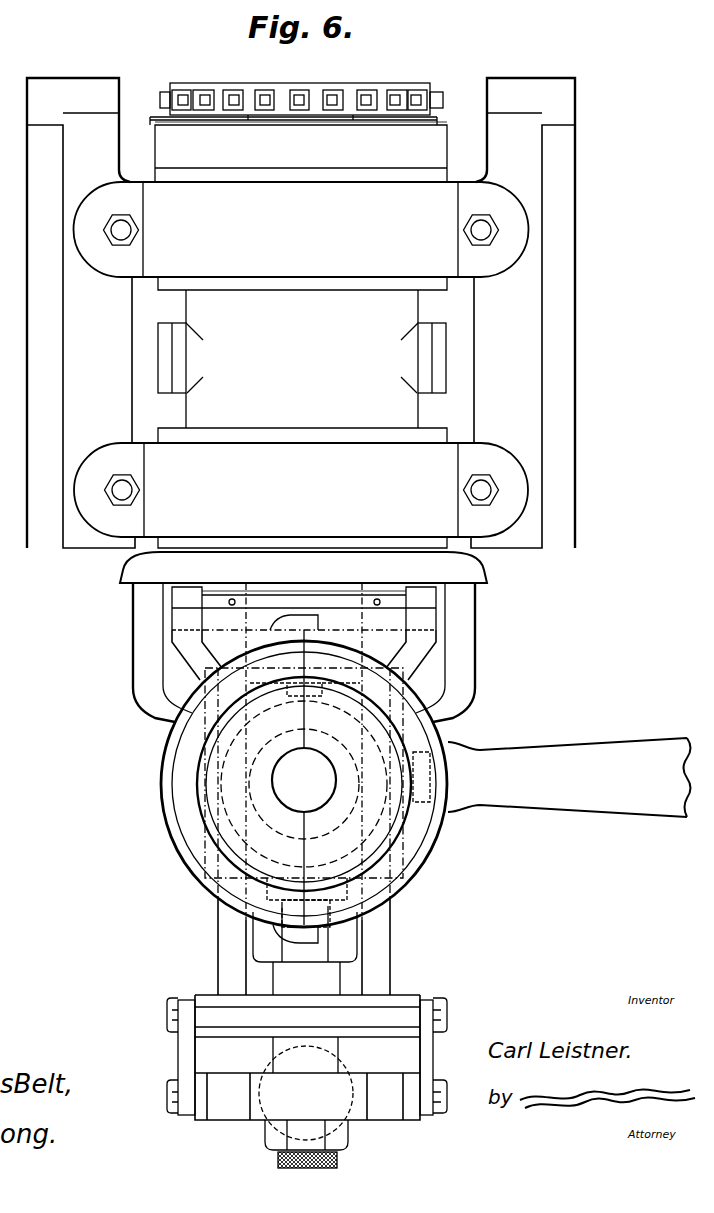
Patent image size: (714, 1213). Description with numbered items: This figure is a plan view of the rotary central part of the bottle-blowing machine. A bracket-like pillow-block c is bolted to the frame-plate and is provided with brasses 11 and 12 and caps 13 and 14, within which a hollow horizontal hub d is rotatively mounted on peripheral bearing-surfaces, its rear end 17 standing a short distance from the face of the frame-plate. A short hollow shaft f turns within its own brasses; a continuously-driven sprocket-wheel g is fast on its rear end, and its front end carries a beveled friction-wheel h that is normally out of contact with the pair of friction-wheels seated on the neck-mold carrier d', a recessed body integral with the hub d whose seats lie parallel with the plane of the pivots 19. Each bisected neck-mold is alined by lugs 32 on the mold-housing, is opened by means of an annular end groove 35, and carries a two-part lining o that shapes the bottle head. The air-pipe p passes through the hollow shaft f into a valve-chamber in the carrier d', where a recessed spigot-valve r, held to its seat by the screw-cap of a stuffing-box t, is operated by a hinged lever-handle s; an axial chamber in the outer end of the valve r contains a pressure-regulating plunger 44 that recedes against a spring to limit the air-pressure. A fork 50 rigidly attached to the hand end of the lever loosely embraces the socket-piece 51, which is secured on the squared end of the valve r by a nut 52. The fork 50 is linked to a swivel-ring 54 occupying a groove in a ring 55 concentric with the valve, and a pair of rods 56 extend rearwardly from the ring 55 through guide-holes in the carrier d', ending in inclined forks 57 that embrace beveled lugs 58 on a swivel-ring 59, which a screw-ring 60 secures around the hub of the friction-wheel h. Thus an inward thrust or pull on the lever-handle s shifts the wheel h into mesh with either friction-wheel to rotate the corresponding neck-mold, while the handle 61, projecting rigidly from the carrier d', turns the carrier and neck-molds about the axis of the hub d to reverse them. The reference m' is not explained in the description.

The pillow-block c is at (301, 313).
The sprocket-wheel g is at (162, 97).
The rear end of the hub 17 is at (155, 121).
The hollow shaft f is at (293, 122).
The brass 12 is at (317, 170).
The cap 14 is at (301, 229).
The hollow horizontal hub d is at (302, 359).
The pivots 19 is at (300, 358).
The brass 11 is at (310, 433).
The cap 13 is at (301, 490).
The inclined forks 57 is at (304, 597).
The beveled lugs 58 is at (304, 619).
The beveled friction-wheel h is at (304, 655).
The screw-ring 60 is at (304, 602).
The swivel-ring 59 is at (304, 622).
The lugs 32 is at (296, 623).
The outer ring m' is at (286, 784).
The annular end groove 35 is at (195, 830).
The two-part lining o is at (281, 780).
The air-pipe p is at (296, 698).
The neck-mold carrier d' is at (335, 797).
The handle 61 is at (569, 777).
The rods 56 is at (304, 946).
The stuffing-box t is at (305, 934).
The spigot-valve r is at (306, 1017).
The ring 55 is at (403, 1000).
The swivel-ring 54 is at (307, 1016).
The lever-handle s is at (267, 1067).
The fork 50 is at (202, 1098).
The socket-piece 51 is at (306, 1093).
The nut 52 is at (342, 1137).
The plunger 44 is at (278, 1160).